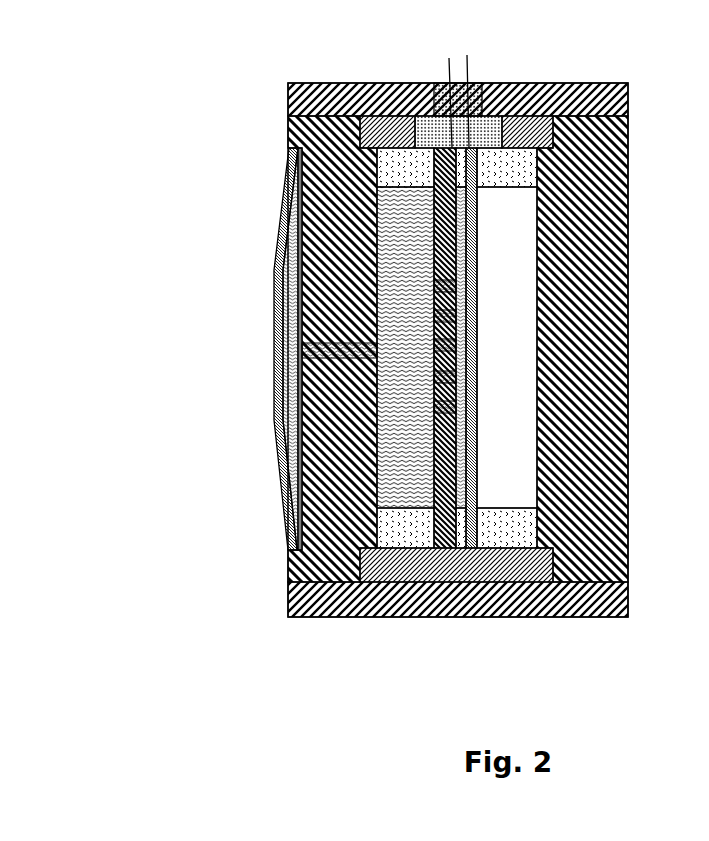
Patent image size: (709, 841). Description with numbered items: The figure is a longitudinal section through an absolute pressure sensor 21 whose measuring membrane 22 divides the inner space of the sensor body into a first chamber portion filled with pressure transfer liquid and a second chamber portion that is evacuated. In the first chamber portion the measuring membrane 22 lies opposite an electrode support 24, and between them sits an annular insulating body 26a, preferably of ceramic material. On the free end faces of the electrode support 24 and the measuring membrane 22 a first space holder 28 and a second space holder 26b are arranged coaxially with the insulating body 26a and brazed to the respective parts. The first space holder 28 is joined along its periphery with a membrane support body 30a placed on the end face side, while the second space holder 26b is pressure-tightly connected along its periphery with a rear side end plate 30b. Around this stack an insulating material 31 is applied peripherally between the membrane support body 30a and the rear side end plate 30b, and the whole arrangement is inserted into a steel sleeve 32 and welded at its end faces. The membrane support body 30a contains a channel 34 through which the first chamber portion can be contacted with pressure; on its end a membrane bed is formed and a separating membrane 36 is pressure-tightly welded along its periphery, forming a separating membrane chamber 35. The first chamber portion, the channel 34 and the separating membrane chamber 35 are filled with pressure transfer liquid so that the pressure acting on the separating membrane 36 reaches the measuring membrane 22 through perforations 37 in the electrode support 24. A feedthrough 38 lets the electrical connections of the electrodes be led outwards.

The absolute pressure sensor 21 is at (158, 117).
The measuring membrane 22 is at (474, 445).
The electrode support 24 is at (298, 175).
The annular insulating body 26a is at (456, 520).
The second space holder 26b is at (518, 537).
The first space holder 28 is at (405, 537).
The membrane support body 30a is at (329, 237).
The rear side end plate 30b is at (575, 538).
The insulating material 31 is at (378, 570).
The steel sleeve 32 is at (295, 600).
The channel 34 is at (298, 372).
The separating membrane chamber 35 is at (297, 407).
The separating membrane 36 is at (277, 270).
The perforations 37 is at (428, 288).
The feedthrough 38 is at (480, 83).